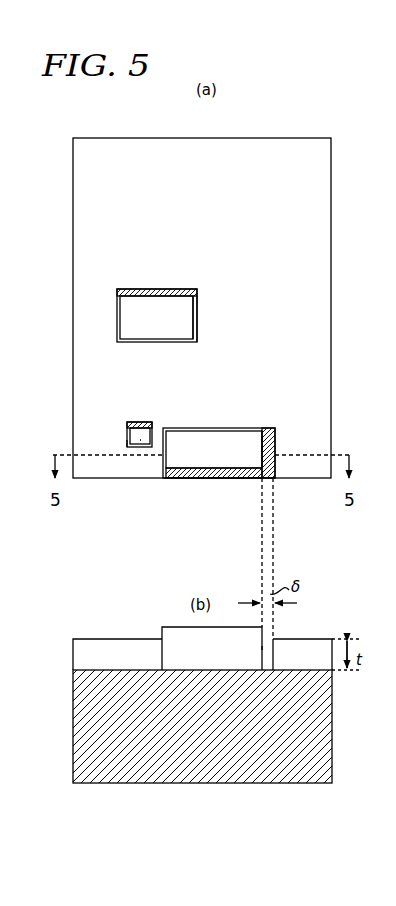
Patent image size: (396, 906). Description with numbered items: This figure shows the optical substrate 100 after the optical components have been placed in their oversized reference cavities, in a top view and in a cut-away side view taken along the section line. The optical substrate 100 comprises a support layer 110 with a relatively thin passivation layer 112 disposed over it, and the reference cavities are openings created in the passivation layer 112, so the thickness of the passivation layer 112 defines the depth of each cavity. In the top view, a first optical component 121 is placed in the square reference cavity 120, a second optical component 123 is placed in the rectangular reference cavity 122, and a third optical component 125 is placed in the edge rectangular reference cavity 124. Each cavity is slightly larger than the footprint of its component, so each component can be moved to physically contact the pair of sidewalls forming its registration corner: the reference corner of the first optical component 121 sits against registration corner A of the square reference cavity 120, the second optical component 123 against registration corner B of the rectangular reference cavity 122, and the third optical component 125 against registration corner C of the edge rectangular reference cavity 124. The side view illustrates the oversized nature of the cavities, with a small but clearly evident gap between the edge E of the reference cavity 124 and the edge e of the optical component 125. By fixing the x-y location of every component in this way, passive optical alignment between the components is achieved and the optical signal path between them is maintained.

The optical substrate 100 is at (264, 130).
The support layer 110 is at (138, 773).
The passivation layer 112 is at (130, 646).
The square reference cavity 120 is at (138, 421).
The first optical component 121 is at (141, 442).
The rectangular reference cavity 122 is at (168, 291).
The second optical component 123 is at (190, 318).
The edge rectangular reference cavity 124 is at (268, 434).
The third optical component 125 is at (208, 436).
The registration corner A is at (131, 447).
The registration corner B is at (117, 342).
The registration corner C is at (165, 428).
The edge of reference cavity E is at (278, 450).
The edge of optical component e is at (261, 448).